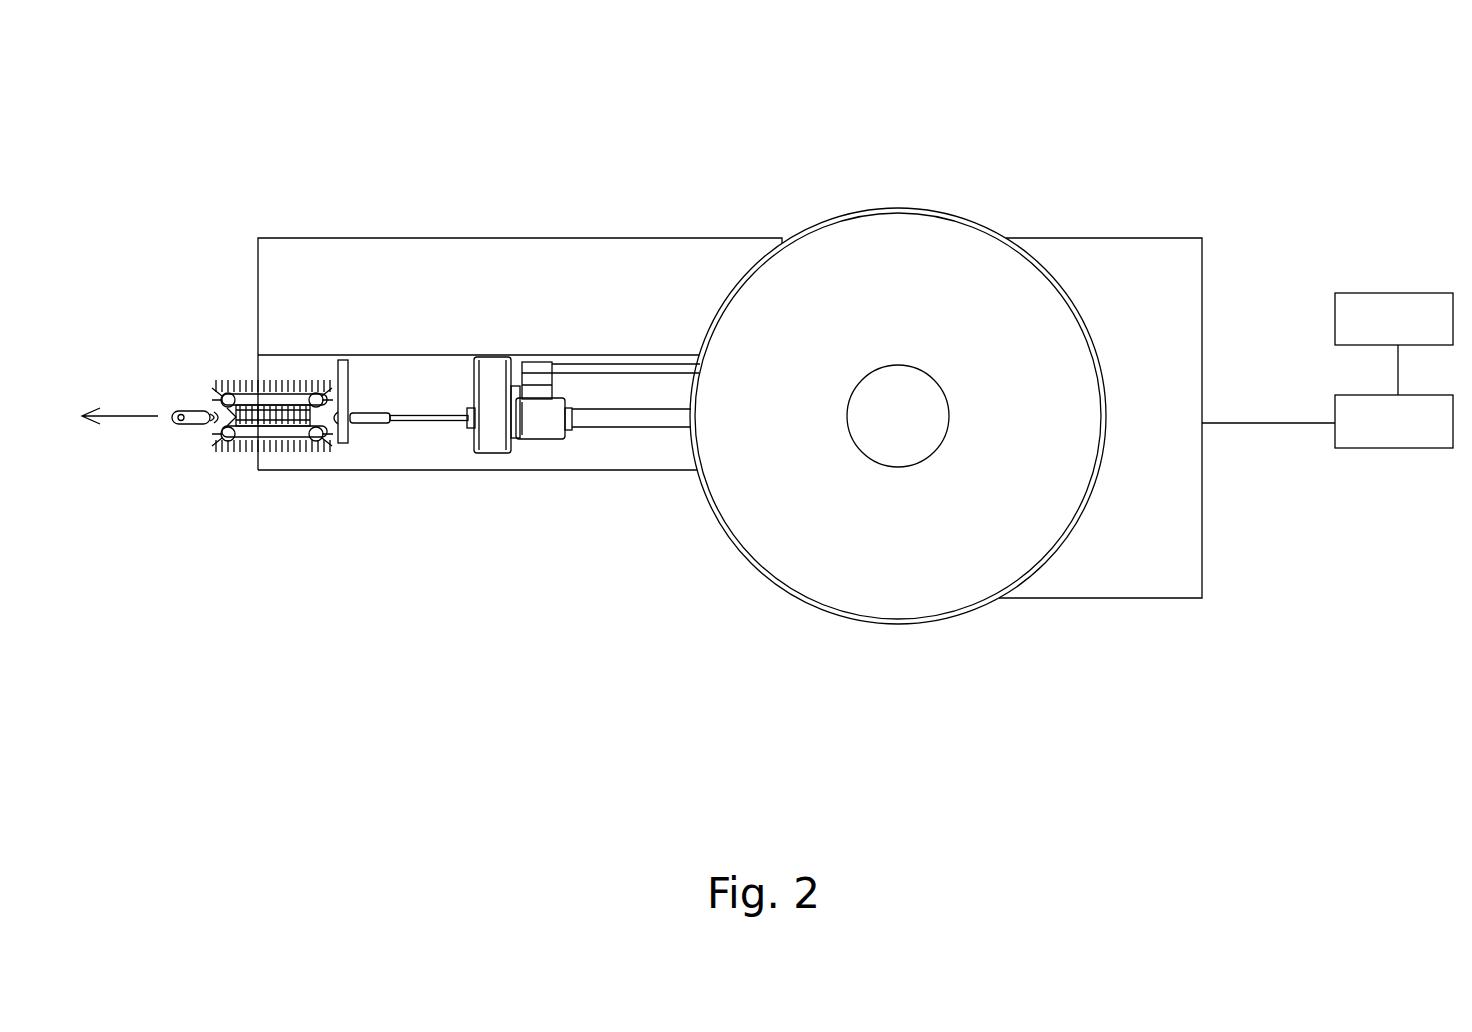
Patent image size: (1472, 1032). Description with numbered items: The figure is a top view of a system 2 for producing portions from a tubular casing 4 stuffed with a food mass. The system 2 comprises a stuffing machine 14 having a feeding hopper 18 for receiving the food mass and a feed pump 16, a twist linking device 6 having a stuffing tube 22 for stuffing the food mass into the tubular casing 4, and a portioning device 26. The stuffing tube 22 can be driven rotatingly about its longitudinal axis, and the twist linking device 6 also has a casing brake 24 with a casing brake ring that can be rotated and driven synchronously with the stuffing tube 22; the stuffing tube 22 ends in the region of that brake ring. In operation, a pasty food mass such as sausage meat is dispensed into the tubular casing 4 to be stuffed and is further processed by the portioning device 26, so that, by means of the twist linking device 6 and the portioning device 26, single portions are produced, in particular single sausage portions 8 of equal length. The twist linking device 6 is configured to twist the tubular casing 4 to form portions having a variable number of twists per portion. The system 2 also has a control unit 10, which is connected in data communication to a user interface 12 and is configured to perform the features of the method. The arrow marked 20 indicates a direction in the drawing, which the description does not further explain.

The system 2 is at (198, 100).
The tubular casing 4 is at (328, 440).
The twist linking device 6 is at (375, 445).
The sausage portions 8 is at (200, 437).
The control unit 10 is at (1363, 421).
The user interface 12 is at (1363, 317).
The stuffing machine 14 is at (1226, 360).
The feed pump 16 is at (604, 502).
The feeding hopper 18 is at (988, 288).
The direction of travel 20 is at (110, 416).
The stuffing tube 22 is at (400, 415).
The casing brake 24 is at (348, 368).
The portioning device 26 is at (273, 344).